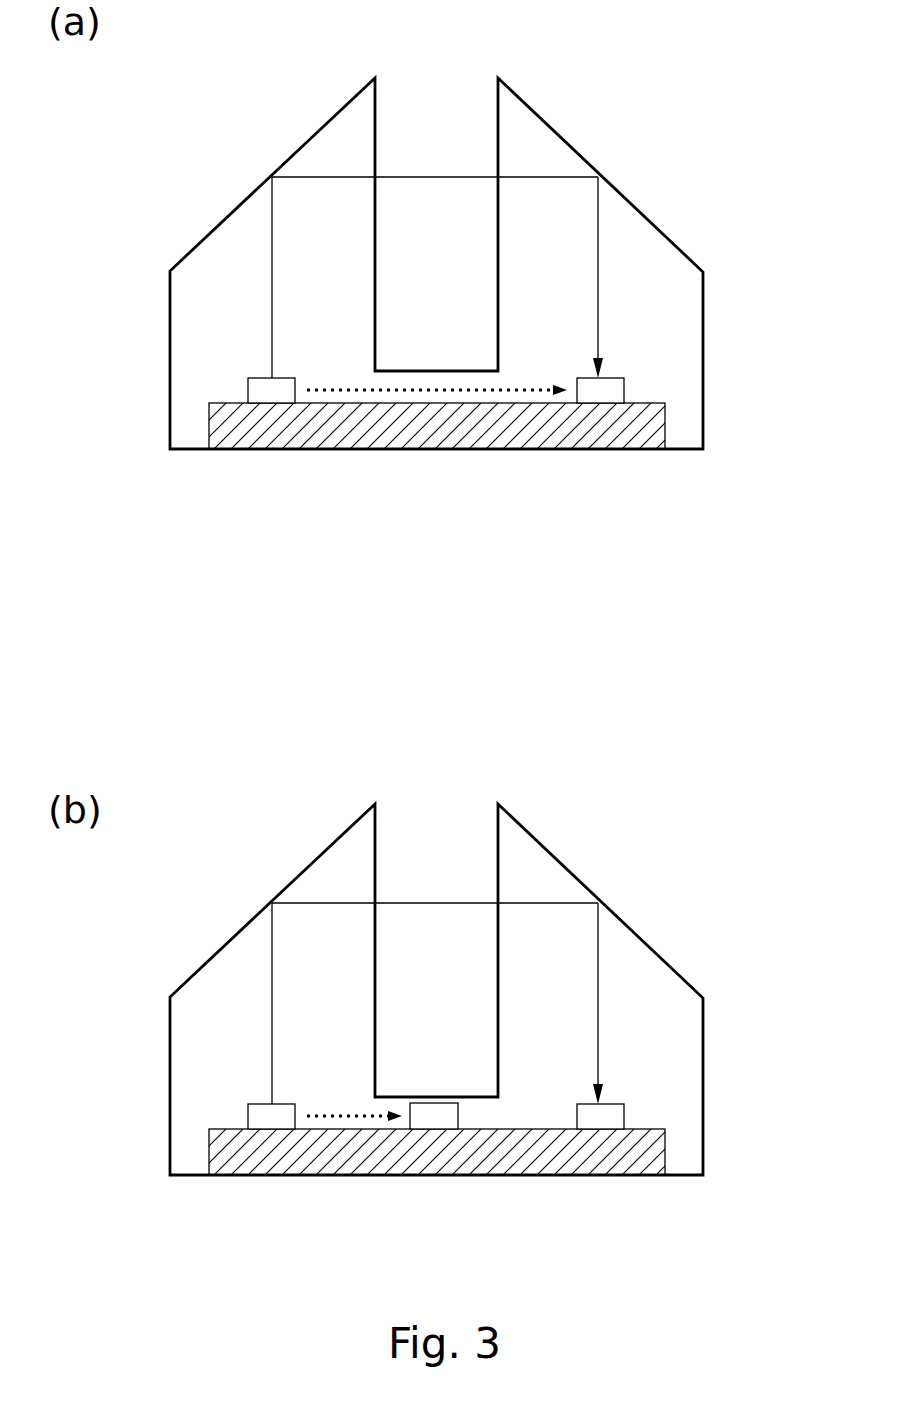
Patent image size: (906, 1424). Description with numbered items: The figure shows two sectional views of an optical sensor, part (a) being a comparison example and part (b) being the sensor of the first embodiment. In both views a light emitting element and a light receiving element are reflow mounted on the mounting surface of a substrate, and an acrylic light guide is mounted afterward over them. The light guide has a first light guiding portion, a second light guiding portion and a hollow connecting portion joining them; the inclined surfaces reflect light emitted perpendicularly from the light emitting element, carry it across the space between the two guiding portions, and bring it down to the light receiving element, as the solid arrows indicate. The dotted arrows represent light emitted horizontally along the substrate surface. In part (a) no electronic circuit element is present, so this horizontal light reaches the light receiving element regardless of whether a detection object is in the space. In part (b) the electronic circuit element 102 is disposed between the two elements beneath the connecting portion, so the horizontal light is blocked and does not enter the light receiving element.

The electronic circuit element 102 is at (433, 1185).